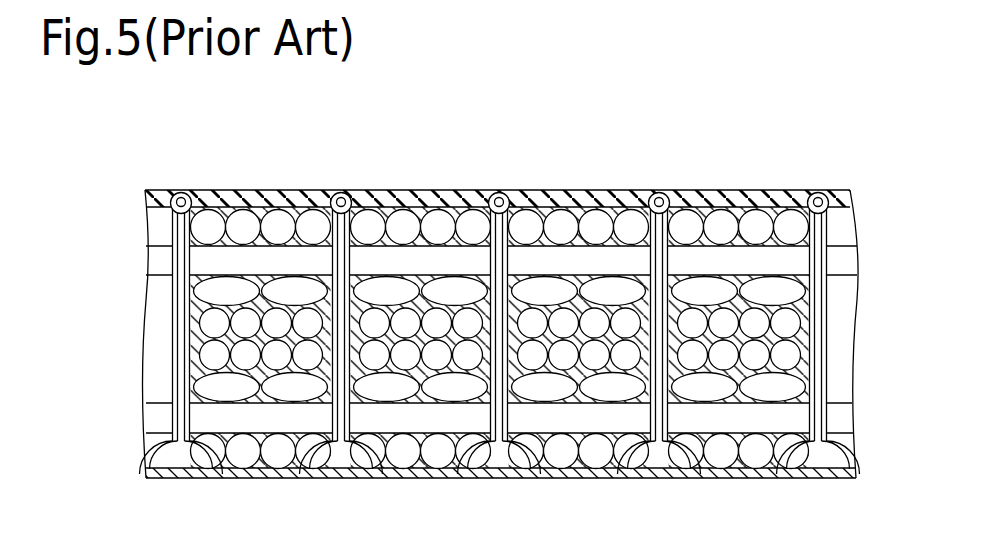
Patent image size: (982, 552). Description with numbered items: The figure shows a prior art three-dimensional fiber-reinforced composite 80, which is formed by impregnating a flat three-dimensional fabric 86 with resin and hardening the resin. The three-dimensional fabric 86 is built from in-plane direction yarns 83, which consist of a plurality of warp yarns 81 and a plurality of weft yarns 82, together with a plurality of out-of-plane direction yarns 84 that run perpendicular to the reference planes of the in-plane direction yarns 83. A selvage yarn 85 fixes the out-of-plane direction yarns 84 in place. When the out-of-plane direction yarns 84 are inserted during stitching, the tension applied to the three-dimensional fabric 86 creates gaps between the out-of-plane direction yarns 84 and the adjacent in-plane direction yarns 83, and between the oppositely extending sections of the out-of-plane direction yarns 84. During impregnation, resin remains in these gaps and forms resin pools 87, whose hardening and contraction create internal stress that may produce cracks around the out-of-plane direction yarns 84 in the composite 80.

The three-dimensional fiber-reinforced composite 80 is at (750, 179).
The warp yarns 81 is at (200, 262).
The weft yarns 82 is at (200, 231).
The in-plane direction yarns 83 is at (78, 208).
The out-of-plane direction yarns 84 is at (354, 196).
The selvage yarn 85 is at (327, 196).
The three-dimensional fabric 86 is at (688, 200).
The resin pools 87 is at (500, 476).